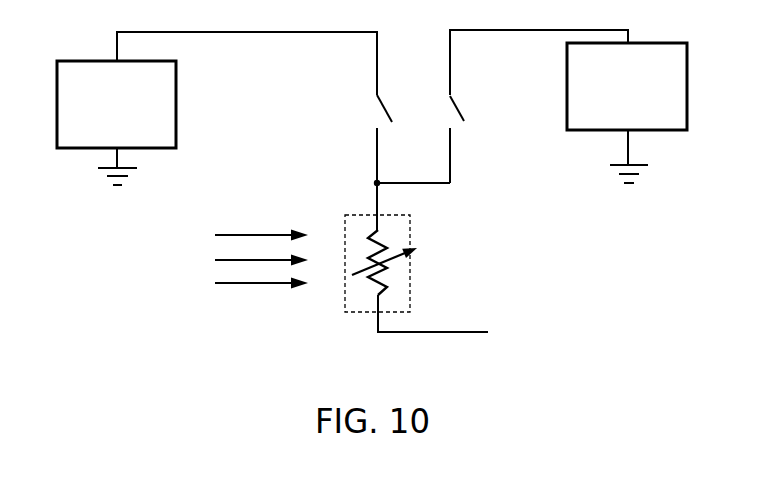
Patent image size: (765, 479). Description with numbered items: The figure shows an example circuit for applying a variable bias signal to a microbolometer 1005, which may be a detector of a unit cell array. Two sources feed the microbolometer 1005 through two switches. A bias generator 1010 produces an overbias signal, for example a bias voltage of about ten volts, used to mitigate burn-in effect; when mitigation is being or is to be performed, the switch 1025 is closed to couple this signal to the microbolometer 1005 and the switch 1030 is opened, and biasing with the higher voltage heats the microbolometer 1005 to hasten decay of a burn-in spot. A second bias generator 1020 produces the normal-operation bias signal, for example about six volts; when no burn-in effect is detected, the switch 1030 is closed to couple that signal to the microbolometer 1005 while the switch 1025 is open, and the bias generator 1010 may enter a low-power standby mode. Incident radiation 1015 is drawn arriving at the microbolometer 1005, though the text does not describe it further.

The microbolometer 1005 is at (410, 279).
The bias generator 1010 is at (95, 140).
The incident light 1015 is at (232, 286).
The bias generator 1020 is at (606, 120).
The switch 1025 is at (374, 118).
The switch 1030 is at (452, 120).